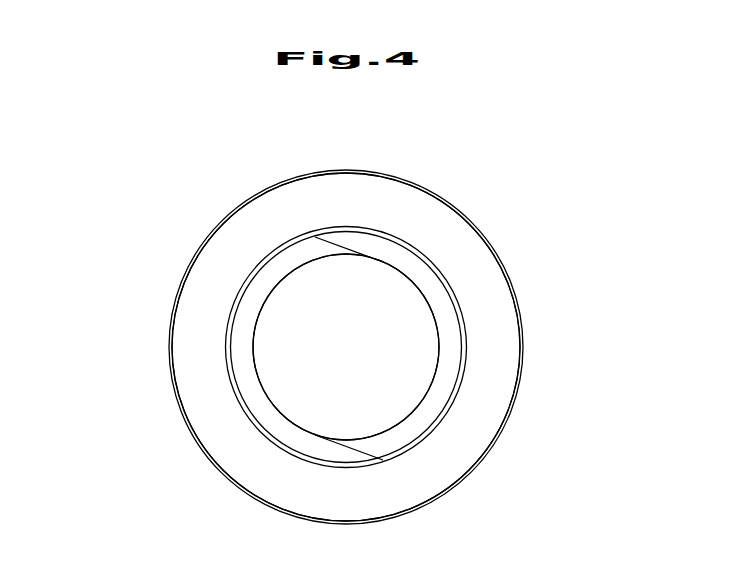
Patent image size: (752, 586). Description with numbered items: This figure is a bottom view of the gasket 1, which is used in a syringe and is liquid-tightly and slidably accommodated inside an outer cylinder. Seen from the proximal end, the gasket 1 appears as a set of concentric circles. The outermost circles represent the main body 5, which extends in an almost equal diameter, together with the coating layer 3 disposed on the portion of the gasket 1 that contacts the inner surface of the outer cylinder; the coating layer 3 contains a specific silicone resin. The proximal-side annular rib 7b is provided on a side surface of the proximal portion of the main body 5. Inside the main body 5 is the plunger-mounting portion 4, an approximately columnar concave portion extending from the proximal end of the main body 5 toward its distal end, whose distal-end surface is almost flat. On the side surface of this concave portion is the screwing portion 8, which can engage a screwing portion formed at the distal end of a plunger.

The gasket 1 is at (454, 176).
The coating layer 3 is at (523, 325).
The plunger-mounting portion 4 is at (295, 396).
The main body 5 is at (480, 409).
The proximal-side annular rib 7b is at (504, 285).
The screwing portion 8 is at (258, 291).